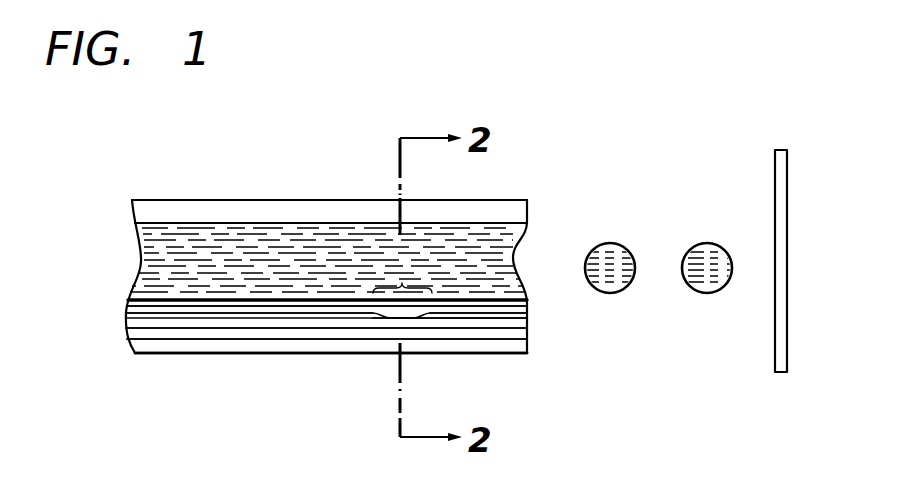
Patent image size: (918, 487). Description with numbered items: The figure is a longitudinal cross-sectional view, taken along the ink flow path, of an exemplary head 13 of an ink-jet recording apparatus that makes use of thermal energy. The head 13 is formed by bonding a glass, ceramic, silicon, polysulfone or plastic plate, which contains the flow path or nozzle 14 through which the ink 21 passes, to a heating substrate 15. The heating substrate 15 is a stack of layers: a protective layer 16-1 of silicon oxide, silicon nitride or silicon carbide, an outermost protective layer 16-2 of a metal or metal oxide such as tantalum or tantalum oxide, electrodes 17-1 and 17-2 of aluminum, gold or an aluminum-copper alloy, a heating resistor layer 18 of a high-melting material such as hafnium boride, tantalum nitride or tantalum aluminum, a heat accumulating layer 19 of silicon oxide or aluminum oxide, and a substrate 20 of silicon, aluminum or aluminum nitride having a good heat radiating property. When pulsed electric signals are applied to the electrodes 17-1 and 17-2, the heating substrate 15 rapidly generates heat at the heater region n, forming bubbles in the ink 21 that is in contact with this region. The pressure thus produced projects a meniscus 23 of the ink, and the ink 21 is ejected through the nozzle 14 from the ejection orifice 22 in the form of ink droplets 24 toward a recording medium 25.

The head 13 is at (214, 200).
The flow path (nozzle) 14 is at (263, 223).
The ink 21 is at (170, 198).
The heater region n is at (402, 283).
The meniscus 23 is at (515, 253).
The ejection orifice 22 is at (533, 287).
The ink droplets 24 is at (733, 237).
The recording medium 25 is at (775, 183).
The heating substrate 15 is at (121, 298).
The protective layer 16-1 is at (163, 310).
The outermost protective layer 16-2 is at (137, 300).
The electrode 17-1 is at (215, 313).
The electrode 17-2 is at (487, 318).
The heating resistor layer 18 is at (260, 324).
The heat accumulating layer 19 is at (310, 335).
The substrate 20 is at (373, 349).